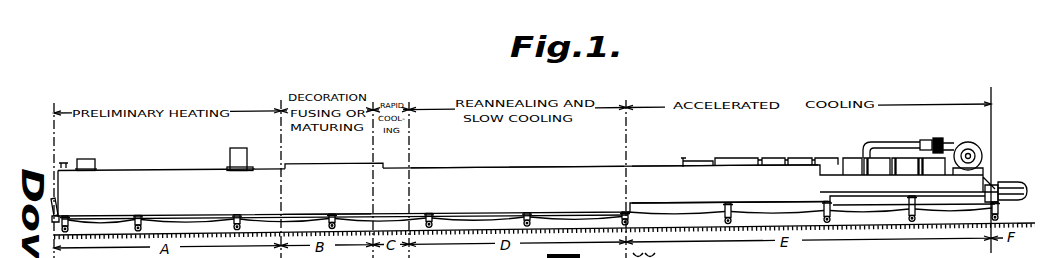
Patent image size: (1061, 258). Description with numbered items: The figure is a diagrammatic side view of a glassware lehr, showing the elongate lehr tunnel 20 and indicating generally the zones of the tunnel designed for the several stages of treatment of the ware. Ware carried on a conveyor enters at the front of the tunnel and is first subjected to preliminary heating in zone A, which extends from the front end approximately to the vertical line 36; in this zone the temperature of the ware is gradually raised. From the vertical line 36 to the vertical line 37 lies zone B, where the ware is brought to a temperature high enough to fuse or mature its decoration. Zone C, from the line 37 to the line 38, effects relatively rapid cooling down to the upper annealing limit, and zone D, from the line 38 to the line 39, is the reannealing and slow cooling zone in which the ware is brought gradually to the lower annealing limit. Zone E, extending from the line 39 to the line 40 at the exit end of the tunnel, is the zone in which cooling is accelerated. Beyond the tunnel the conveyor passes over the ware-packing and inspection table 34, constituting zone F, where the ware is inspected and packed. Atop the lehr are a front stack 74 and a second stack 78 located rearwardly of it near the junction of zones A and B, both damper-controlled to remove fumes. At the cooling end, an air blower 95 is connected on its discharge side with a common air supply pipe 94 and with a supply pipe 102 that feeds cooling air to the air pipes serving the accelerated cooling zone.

The lehr tunnel 20 is at (525, 197).
The ware-packing and inspection table 34 is at (1019, 182).
The vertical line 36 is at (283, 147).
The vertical line 37 is at (372, 171).
The line 38 is at (410, 150).
The line 39 is at (627, 133).
The line 40 is at (990, 139).
The front stack 74 is at (92, 161).
The second stack 78 is at (230, 154).
The common air supply pipe 94 is at (698, 160).
The air blower 95 is at (966, 143).
The supply pipe 102 is at (869, 148).